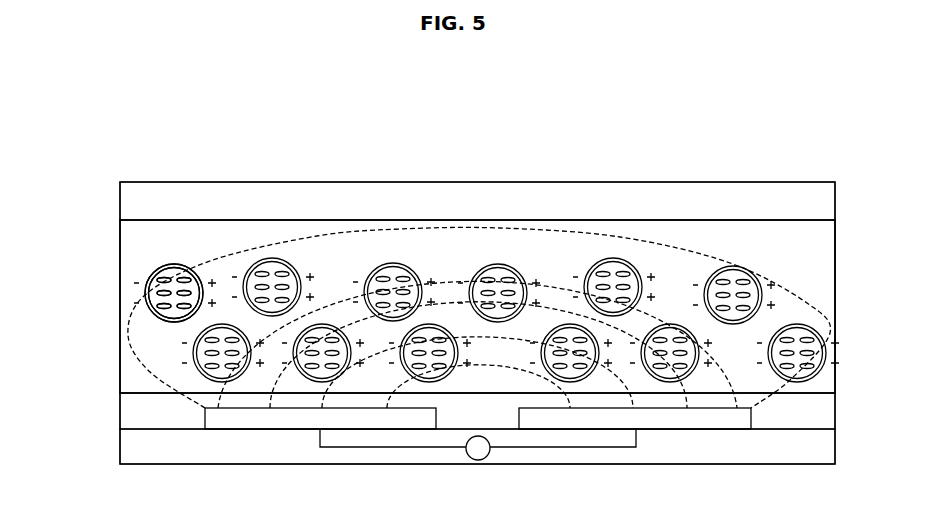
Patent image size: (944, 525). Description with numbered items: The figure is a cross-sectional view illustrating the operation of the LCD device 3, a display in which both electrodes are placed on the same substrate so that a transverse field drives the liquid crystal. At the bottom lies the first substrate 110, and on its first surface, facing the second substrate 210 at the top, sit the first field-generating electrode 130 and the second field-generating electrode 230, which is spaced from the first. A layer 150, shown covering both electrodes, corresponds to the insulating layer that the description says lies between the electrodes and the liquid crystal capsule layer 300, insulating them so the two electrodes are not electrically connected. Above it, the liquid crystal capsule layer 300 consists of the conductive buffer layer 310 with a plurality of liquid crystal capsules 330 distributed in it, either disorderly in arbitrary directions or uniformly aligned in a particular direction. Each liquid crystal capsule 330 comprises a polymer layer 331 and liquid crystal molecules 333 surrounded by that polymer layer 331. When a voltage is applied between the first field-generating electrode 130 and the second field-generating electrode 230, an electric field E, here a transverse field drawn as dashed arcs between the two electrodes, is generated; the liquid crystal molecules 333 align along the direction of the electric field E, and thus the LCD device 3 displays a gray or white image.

The LCD device 3 is at (152, 135).
The second substrate 210 is at (125, 198).
The conductive buffer layer 310 is at (125, 238).
The liquid crystal capsule layer 300 is at (838, 220).
The liquid crystal capsules 330 is at (83, 285).
The polymer layer 331 is at (146, 283).
The liquid crystal molecules 333 is at (158, 293).
The insulating layer 150 is at (128, 407).
The first substrate 110 is at (128, 450).
The first field-generating electrode 130 is at (290, 420).
The second field-generating electrode 230 is at (676, 420).
The electric field E is at (450, 273).